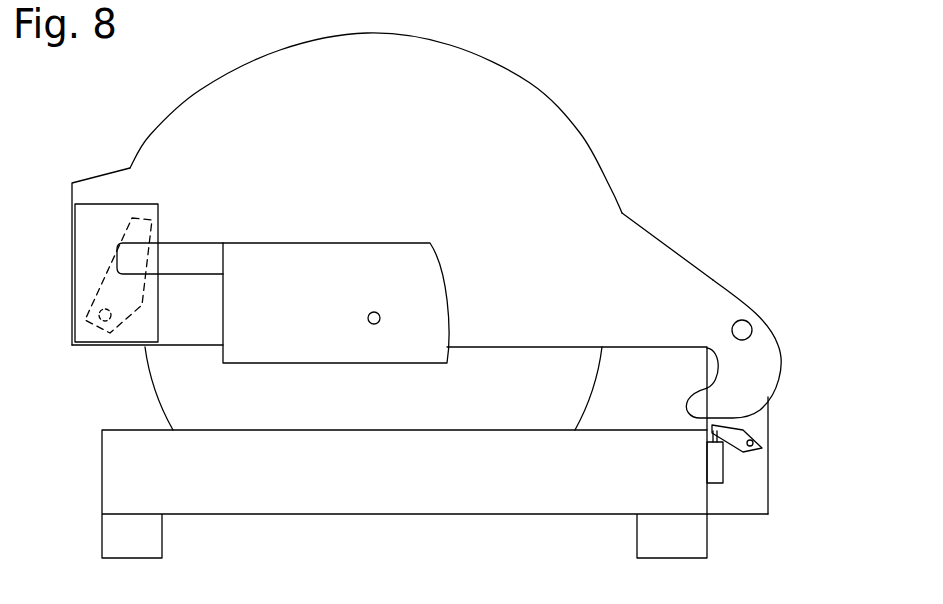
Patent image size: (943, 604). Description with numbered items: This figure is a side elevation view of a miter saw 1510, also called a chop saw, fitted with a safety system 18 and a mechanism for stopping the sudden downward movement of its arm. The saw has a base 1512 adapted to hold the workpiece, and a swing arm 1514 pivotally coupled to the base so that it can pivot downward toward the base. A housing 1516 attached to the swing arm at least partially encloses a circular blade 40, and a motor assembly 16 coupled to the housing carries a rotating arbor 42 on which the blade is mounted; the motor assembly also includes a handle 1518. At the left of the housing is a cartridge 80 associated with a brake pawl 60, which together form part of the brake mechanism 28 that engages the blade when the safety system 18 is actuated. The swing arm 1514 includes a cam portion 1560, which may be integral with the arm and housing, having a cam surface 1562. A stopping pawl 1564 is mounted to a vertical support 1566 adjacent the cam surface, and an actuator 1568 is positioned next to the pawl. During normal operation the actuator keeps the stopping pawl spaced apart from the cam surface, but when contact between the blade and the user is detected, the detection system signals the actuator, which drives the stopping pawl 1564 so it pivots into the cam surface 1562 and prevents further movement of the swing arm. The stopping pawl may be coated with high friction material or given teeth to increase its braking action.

The safety system 18 is at (112, 153).
The housing 1516 is at (530, 83).
The swing arm 1514 is at (688, 258).
The miter saw 1510 is at (705, 163).
The cam portion 1560 is at (767, 352).
The cartridge 80 is at (122, 340).
The brake pawl 60 is at (116, 275).
The brake mechanism 28 is at (90, 280).
The handle 1518 is at (168, 275).
The motor assembly 16 is at (298, 363).
The arbor 42 is at (377, 324).
The circular blade 40 is at (241, 405).
The base 1512 is at (127, 486).
The vertical support 1566 is at (767, 405).
The cam surface 1562 is at (742, 420).
The stopping pawl 1564 is at (767, 445).
The actuator 1568 is at (715, 468).